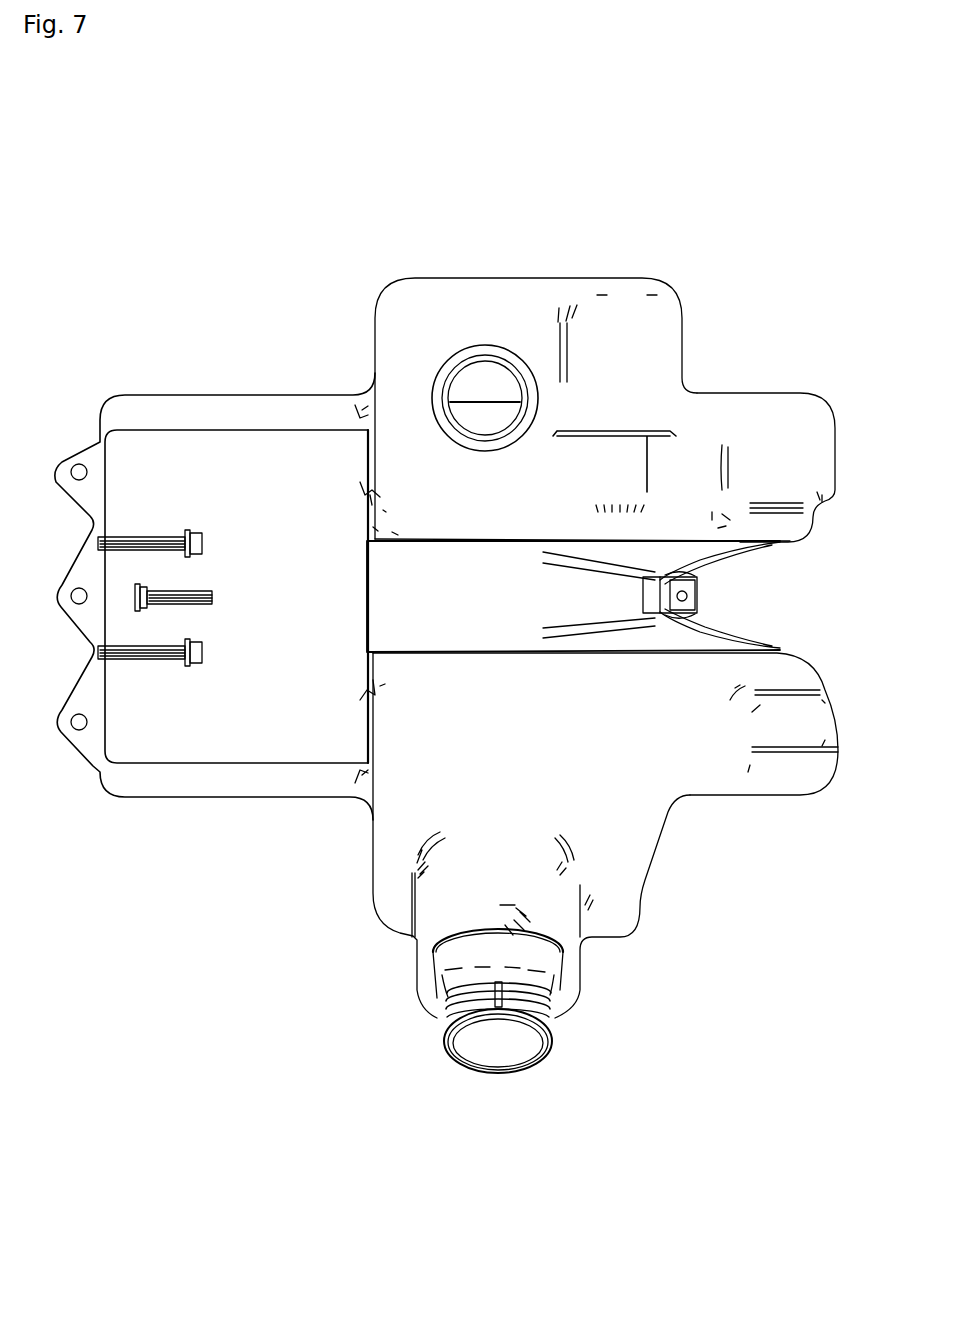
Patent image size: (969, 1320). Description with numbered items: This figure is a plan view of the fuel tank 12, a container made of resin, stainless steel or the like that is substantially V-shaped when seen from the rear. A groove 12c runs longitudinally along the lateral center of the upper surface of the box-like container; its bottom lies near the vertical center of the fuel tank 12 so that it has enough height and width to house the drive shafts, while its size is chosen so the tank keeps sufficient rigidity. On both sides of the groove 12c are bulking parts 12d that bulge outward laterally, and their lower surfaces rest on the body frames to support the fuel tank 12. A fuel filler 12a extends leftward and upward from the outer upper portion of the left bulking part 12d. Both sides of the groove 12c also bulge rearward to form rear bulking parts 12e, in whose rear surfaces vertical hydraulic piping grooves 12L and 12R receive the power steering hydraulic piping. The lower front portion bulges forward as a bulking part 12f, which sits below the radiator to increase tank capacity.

The fuel tank 12 is at (205, 205).
The fuel filler 12a is at (527, 1073).
The groove 12c is at (507, 610).
The bulking parts 12d is at (531, 278).
The rear bulking parts 12e is at (753, 393).
The bulking part 12f is at (297, 610).
The hydraulic piping groove 12R is at (790, 483).
The hydraulic piping groove 12L is at (792, 737).